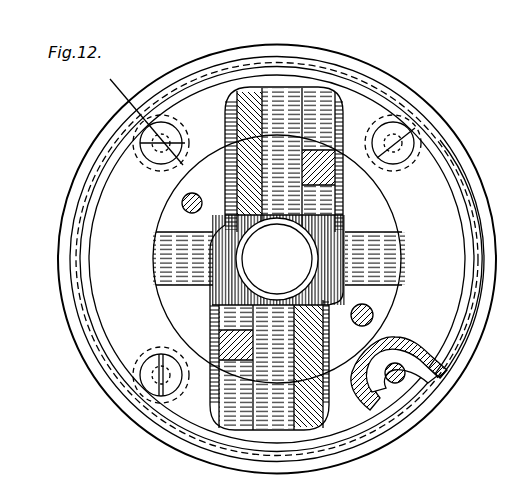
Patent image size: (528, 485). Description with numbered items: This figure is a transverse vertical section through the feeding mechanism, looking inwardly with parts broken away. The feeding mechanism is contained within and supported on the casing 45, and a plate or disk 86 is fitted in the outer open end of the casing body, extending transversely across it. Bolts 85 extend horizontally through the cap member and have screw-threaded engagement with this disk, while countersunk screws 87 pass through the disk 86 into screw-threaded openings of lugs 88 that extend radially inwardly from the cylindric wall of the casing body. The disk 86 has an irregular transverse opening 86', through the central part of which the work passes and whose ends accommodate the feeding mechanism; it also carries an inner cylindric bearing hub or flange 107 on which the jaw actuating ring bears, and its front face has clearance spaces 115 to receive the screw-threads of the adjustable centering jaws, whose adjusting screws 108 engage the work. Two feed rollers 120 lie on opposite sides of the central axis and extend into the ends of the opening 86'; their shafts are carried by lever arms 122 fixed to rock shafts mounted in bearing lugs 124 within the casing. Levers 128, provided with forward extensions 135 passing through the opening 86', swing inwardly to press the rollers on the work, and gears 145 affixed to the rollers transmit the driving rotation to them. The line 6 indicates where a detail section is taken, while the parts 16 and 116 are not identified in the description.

The section line 6 is at (114, 90).
The flange 16 is at (196, 212).
The casing 45 is at (297, 47).
The bolts 85 is at (182, 205).
The disk 86 is at (248, 259).
The irregular transverse opening 86' is at (482, 259).
The countersunk screws 87 is at (140, 143).
The lugs 88 is at (130, 154).
The inner cylindric bearing hub or flange 107 is at (393, 218).
The adjusting screws 108 is at (467, 217).
The clearance spaces 115 is at (165, 240).
The shaft bore 116 is at (239, 254).
The feed rollers 120 is at (277, 259).
The lever arms 122 is at (236, 114).
The bearing lugs 124 is at (405, 348).
The levers 128 is at (277, 258).
The forward extensions 135 is at (325, 170).
The gears 145 is at (245, 122).